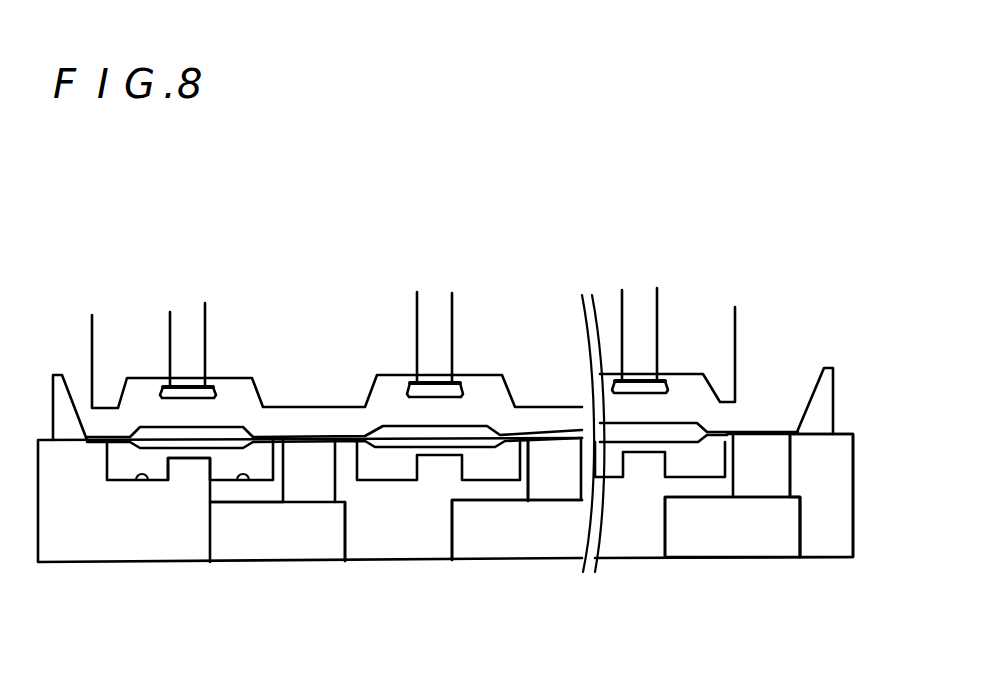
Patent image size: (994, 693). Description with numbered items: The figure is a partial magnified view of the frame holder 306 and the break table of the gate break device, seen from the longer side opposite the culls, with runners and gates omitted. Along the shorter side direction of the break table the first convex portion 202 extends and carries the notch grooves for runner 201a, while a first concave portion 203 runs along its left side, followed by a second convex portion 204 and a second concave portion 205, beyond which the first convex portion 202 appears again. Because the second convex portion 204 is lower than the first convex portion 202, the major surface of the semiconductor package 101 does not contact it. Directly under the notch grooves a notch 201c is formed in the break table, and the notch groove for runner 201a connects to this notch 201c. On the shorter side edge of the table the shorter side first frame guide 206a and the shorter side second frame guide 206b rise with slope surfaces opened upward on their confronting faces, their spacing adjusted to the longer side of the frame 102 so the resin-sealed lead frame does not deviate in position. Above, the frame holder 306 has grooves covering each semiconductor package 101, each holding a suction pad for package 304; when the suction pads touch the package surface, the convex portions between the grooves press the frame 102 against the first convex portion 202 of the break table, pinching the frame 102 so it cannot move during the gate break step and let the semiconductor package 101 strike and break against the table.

The semiconductor package 101 is at (153, 443).
The frame 102 is at (765, 427).
The notch groove for runner 201a is at (765, 480).
The notch 201c is at (708, 540).
The first convex portion 202 is at (343, 468).
The first concave portion 203 is at (250, 475).
The second convex portion 204 is at (187, 470).
The second concave portion 205 is at (148, 482).
The shorter side first frame guide 206a is at (58, 375).
The shorter side second frame guide 206b is at (822, 390).
The suction pad for package 304 is at (650, 303).
The frame holder 306 is at (305, 353).